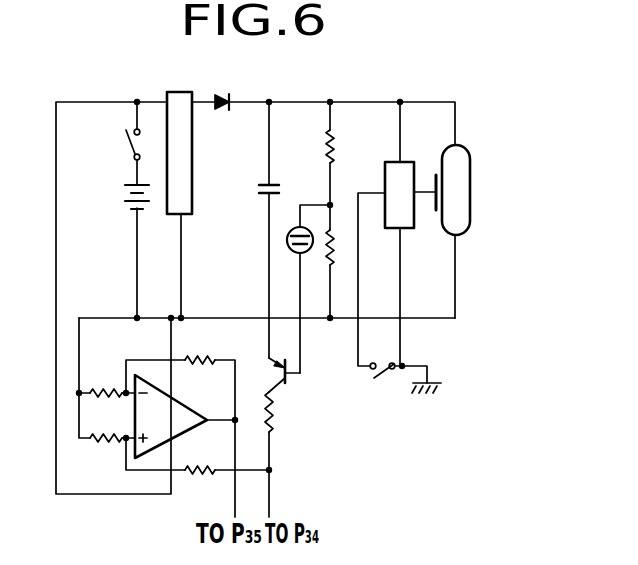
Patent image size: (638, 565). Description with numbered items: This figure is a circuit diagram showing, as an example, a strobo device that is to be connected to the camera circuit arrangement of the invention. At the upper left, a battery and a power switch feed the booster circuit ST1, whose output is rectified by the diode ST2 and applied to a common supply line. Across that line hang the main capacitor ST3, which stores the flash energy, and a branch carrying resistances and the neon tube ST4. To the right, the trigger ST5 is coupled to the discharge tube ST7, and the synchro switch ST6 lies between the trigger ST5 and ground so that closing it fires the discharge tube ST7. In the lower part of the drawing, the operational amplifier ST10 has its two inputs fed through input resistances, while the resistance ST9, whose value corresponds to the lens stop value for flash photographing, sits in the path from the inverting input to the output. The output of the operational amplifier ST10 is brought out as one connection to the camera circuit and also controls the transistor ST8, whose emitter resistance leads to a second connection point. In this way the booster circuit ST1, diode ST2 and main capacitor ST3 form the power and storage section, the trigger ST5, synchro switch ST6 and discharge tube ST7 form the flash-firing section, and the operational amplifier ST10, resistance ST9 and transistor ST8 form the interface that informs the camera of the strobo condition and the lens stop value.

The booster circuit ST1 is at (192, 150).
The diode ST2 is at (222, 94).
The main capacitor ST3 is at (259, 188).
The neon tube ST4 is at (287, 241).
The trigger ST5 is at (388, 176).
The synchro switch ST6 is at (378, 378).
The discharge tube ST7 is at (462, 192).
The transistor ST8 is at (287, 383).
The resistance ST9 is at (200, 357).
The operational amplifier ST10 is at (171, 416).